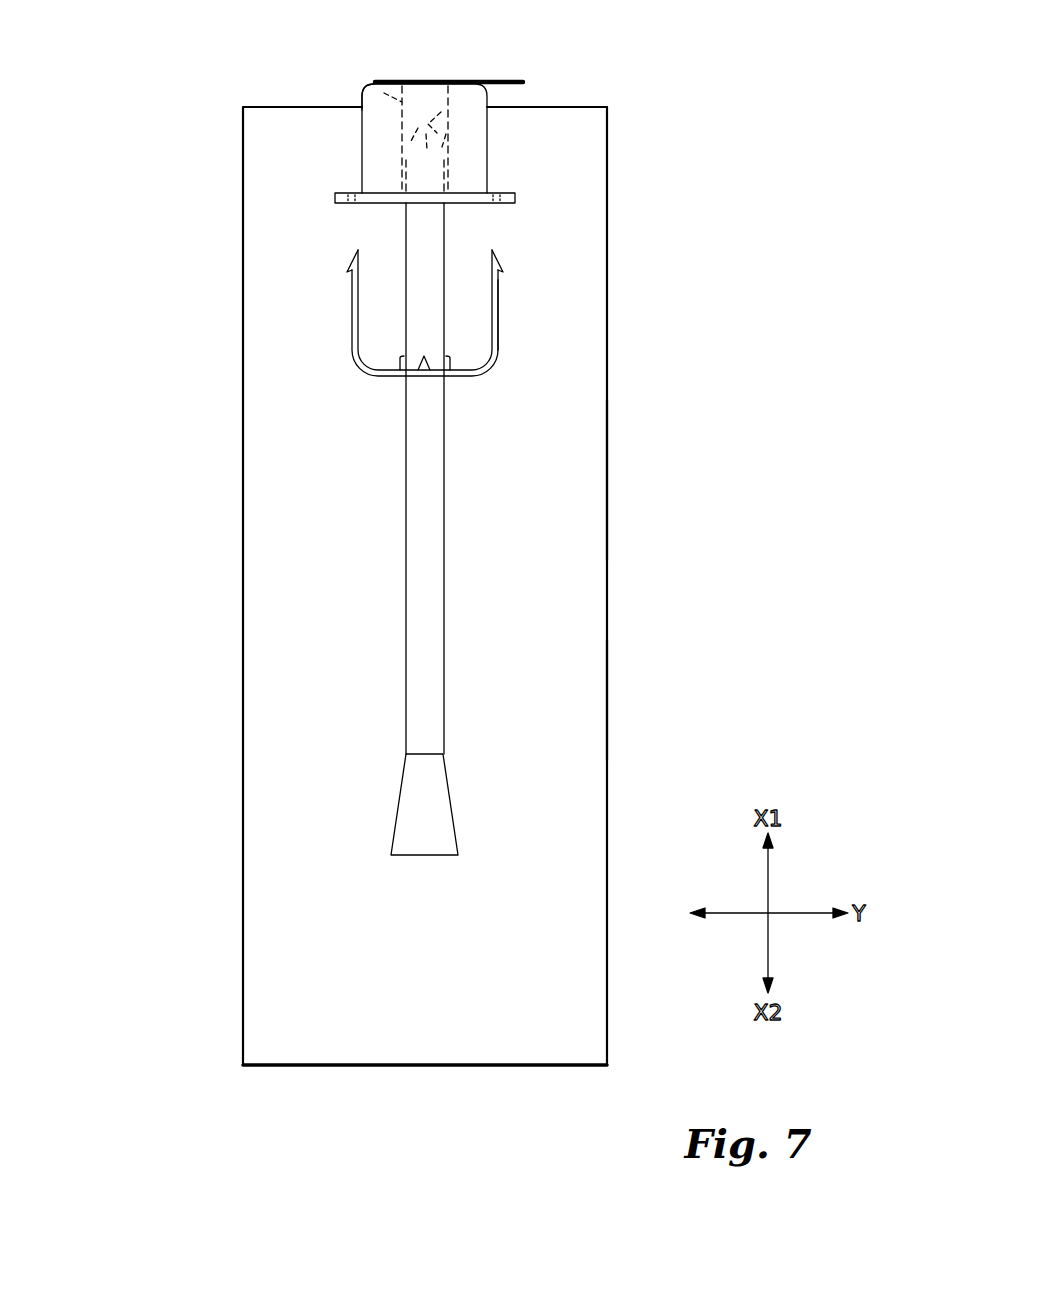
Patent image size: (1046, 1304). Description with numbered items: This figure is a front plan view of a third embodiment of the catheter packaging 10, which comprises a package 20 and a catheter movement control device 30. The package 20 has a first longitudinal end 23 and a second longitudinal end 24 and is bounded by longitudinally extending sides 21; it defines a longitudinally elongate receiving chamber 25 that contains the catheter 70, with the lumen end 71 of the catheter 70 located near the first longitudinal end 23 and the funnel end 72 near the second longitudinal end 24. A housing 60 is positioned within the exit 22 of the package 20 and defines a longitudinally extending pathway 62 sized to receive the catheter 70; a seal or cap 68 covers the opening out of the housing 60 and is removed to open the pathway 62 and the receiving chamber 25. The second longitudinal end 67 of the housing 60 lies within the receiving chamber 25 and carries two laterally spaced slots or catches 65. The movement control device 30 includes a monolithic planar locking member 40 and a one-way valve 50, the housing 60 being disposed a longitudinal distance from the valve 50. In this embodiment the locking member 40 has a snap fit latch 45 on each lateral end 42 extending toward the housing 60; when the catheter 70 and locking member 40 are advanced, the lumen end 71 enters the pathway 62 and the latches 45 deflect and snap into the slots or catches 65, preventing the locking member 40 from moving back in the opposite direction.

The catheter packaging 10 is at (142, 108).
The package 20 is at (243, 350).
The longitudinally extending side 21 is at (607, 498).
The exit 22 is at (378, 103).
The first longitudinal end 23 is at (575, 107).
The second longitudinal end 24 is at (300, 1068).
The receiving chamber 25 is at (583, 689).
The movement control device 30 is at (498, 353).
The monolithic planar locking member 40 is at (496, 366).
The lateral end 42 is at (499, 338).
The snap fit latch 45 is at (497, 252).
The valve 50 is at (423, 372).
The housing 60 is at (372, 133).
The pathway 62 is at (384, 93).
The slots or catches 65 is at (351, 205).
The second longitudinal end 67 is at (383, 205).
The cap or seal 68 is at (492, 80).
The catheter 70 is at (408, 572).
The lumen end 71 is at (452, 120).
The funnel end 72 is at (447, 822).